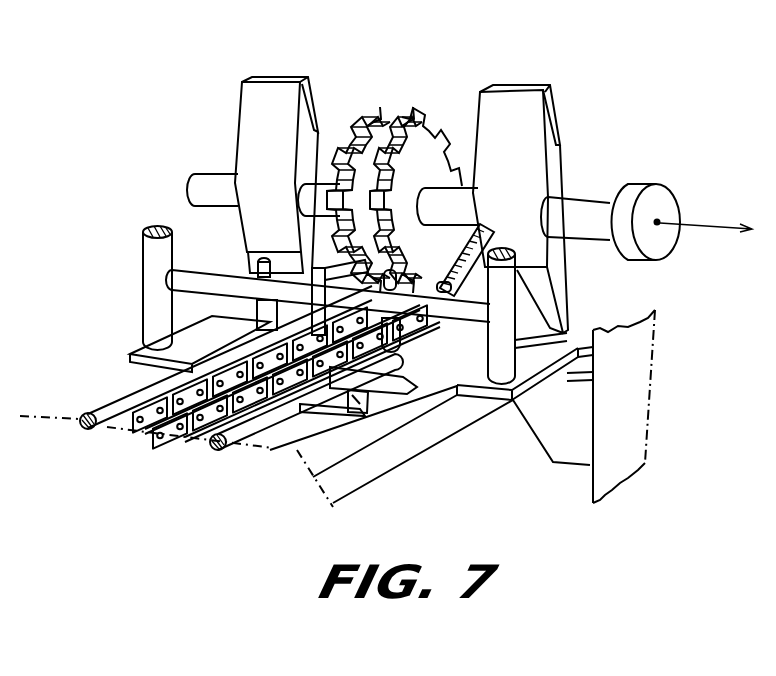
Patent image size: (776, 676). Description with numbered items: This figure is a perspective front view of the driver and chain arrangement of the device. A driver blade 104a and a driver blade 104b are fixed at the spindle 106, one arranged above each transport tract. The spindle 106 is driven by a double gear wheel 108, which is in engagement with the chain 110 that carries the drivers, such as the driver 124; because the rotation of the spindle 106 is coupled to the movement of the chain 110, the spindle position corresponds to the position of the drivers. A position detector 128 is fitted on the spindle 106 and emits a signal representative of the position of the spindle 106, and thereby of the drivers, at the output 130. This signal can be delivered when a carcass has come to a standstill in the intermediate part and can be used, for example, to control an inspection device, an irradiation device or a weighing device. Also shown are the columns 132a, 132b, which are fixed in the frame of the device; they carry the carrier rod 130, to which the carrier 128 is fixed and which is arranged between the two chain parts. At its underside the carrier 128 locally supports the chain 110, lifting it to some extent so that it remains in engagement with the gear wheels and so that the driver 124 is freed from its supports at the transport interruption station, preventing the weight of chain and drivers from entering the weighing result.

The driver blade 104a is at (538, 112).
The driver blade 104b is at (258, 90).
The spindle 106 is at (578, 202).
The double gear wheel 108 is at (407, 112).
The chain 110 is at (160, 384).
The driver 124 is at (372, 396).
The position detector 128 is at (664, 198).
The output 130 is at (213, 282).
The column 132a is at (503, 380).
The column 132b is at (152, 265).